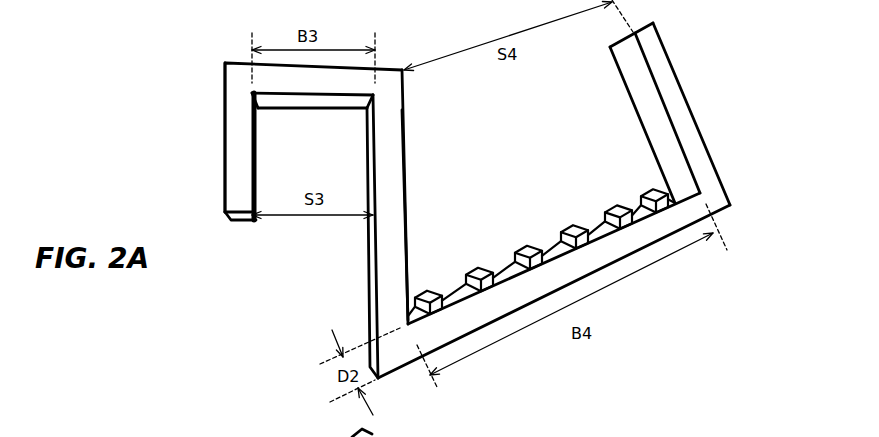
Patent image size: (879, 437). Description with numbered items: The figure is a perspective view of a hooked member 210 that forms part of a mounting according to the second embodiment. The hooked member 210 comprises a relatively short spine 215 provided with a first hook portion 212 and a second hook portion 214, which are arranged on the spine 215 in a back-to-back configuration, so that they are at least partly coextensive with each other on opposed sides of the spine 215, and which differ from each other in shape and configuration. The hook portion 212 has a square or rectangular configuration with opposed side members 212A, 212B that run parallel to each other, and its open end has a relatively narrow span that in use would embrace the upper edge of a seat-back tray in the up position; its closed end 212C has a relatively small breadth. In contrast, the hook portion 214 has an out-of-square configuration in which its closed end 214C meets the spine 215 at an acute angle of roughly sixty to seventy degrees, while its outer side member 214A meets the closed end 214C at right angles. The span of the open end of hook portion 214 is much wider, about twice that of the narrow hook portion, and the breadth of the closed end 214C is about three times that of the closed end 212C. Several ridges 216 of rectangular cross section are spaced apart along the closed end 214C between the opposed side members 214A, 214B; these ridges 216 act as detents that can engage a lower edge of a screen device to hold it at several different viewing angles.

The hooked member 210 is at (152, 131).
The hook portion 212 is at (224, 100).
The side member 212A is at (232, 136).
The side member 212B is at (387, 162).
The closed end 212C is at (287, 100).
The hook portion 214 is at (693, 110).
The outer side member 214A is at (662, 73).
The side member 214B is at (388, 251).
The closed end 214C is at (461, 295).
The spine 215 is at (395, 207).
The ridges 216 is at (530, 249).